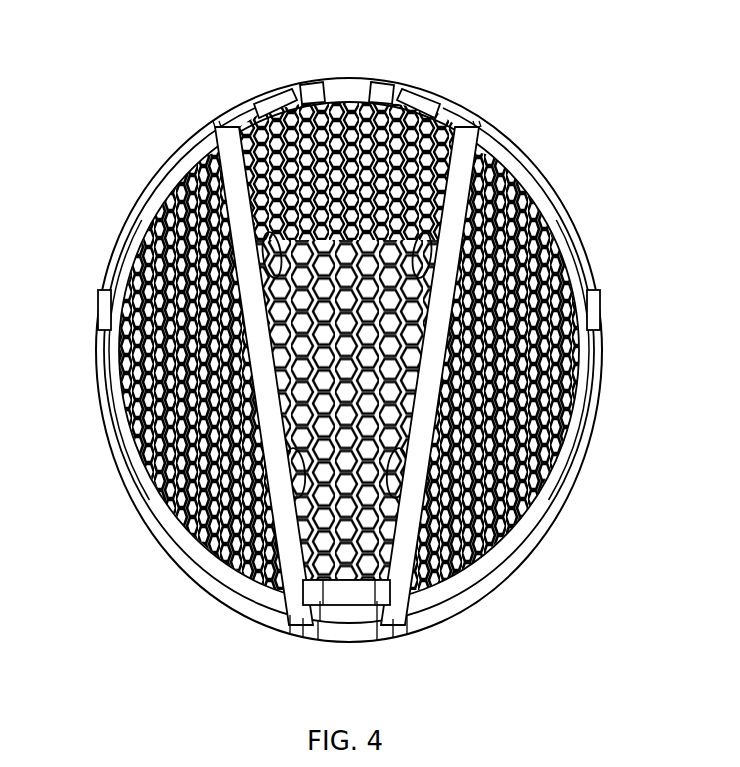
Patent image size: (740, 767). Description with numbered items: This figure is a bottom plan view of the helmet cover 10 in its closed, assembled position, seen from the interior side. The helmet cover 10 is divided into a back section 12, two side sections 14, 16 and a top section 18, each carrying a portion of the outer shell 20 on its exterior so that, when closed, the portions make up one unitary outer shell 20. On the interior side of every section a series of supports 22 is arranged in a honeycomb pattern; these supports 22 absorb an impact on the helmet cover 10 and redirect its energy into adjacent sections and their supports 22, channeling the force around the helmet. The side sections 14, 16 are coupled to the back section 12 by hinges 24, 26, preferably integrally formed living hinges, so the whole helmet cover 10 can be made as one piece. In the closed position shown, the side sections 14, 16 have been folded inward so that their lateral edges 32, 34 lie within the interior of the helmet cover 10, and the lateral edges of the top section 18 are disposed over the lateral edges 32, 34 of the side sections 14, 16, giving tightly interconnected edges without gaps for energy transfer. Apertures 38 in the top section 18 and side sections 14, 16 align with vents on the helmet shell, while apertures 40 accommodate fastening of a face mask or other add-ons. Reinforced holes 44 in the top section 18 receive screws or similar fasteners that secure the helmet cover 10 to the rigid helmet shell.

The helmet cover 10 is at (374, 345).
The back section 12 is at (345, 632).
The side section 14 is at (178, 550).
The side section 16 is at (520, 550).
The top section 18 is at (358, 92).
The outer shell 20 is at (226, 609).
The supports 22 is at (138, 243).
The hinge 24 is at (292, 631).
The hinge 26 is at (404, 631).
The intersecting edge 32 is at (237, 192).
The intersecting edge 34 is at (457, 192).
The apertures 38 is at (273, 252).
The apertures 40 is at (98, 300).
The reinforced holes 44 is at (276, 98).